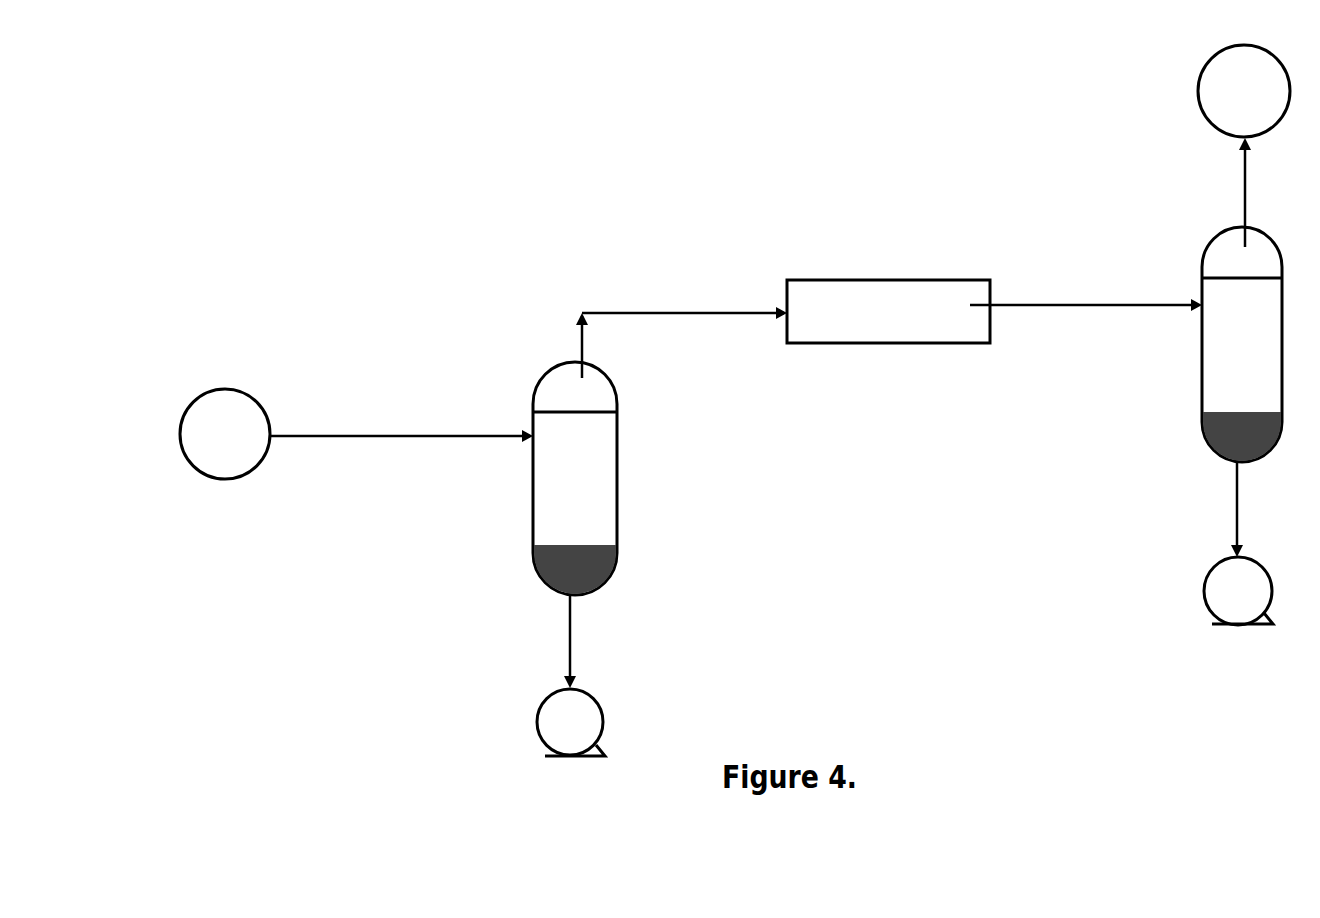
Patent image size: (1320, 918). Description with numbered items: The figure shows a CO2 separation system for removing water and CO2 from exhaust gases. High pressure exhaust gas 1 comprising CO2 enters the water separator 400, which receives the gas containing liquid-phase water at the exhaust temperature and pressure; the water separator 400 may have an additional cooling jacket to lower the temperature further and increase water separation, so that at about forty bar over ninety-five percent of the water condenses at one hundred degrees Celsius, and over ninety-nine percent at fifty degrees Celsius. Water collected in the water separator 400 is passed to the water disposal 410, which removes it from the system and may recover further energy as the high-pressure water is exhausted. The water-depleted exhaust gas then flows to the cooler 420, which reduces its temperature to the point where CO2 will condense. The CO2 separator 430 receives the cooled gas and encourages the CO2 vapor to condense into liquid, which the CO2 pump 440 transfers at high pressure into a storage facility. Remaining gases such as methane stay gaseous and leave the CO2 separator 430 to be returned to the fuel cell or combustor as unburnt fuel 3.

The high pressure exhaust gas 1 is at (356, 434).
The unburnt fuel 3 is at (1244, 91).
The water separator 400 is at (535, 398).
The water disposal 410 is at (538, 722).
The cooler 420 is at (828, 287).
The CO2 separator 430 is at (1202, 270).
The CO2 pump 440 is at (1205, 597).